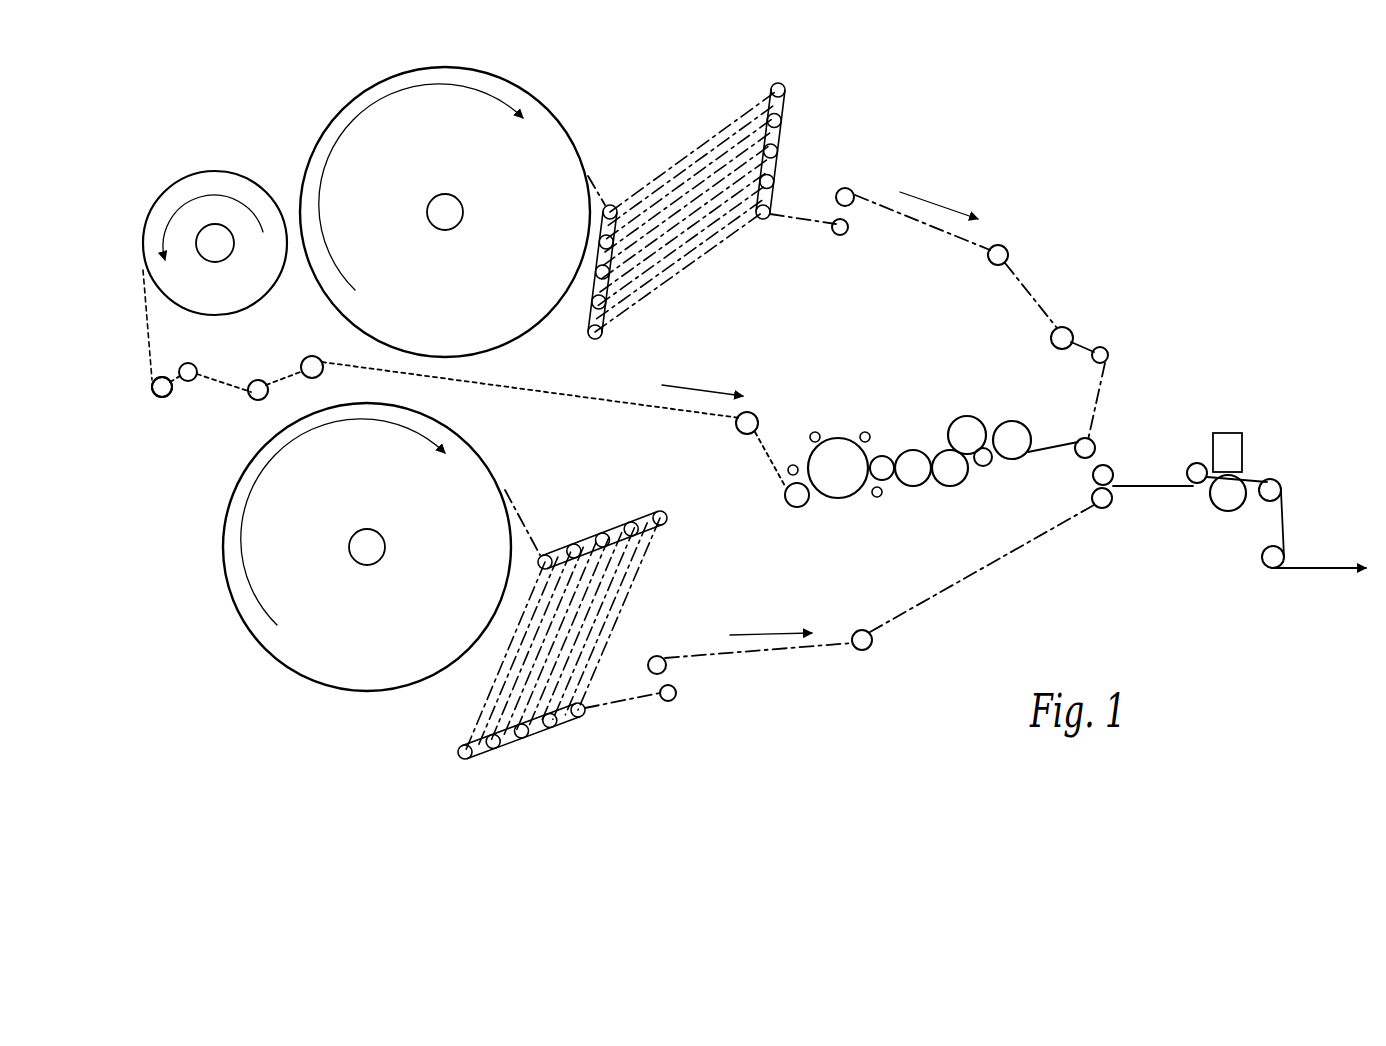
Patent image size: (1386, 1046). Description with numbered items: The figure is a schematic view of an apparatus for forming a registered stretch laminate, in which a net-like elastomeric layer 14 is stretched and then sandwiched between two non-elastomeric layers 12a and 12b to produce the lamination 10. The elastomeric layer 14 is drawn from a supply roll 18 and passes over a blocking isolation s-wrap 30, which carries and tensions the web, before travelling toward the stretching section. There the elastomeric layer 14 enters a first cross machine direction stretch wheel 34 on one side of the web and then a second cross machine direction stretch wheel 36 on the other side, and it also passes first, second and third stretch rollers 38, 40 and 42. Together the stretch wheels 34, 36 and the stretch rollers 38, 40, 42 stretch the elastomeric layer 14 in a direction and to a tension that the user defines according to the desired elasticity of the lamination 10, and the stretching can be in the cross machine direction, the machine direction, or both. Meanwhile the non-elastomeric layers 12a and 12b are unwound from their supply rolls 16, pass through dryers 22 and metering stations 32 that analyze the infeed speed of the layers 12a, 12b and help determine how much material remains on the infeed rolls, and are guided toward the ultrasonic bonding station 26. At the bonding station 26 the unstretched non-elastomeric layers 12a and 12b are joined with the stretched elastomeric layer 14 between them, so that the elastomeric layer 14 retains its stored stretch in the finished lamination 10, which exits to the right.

The lamination 10 is at (1315, 567).
The non-elastomeric layer 12a is at (592, 182).
The non-elastomeric layer 12b is at (527, 522).
The elastomeric layer 14 is at (147, 332).
The supply roll 16 is at (352, 651).
The supply roll 18 is at (201, 306).
The dryer 22 is at (697, 145).
The ultrasonic bonding station 26 is at (1245, 468).
The blocking isolation s-wrap 30 is at (157, 397).
The metering station 32 is at (838, 236).
The first cross machine direction stretch wheel 34 is at (815, 430).
The second cross machine direction stretch wheel 36 is at (866, 431).
The first stretch roller 38 is at (912, 485).
The second stretch roller 40 is at (950, 485).
The third stretch roller 42 is at (965, 418).